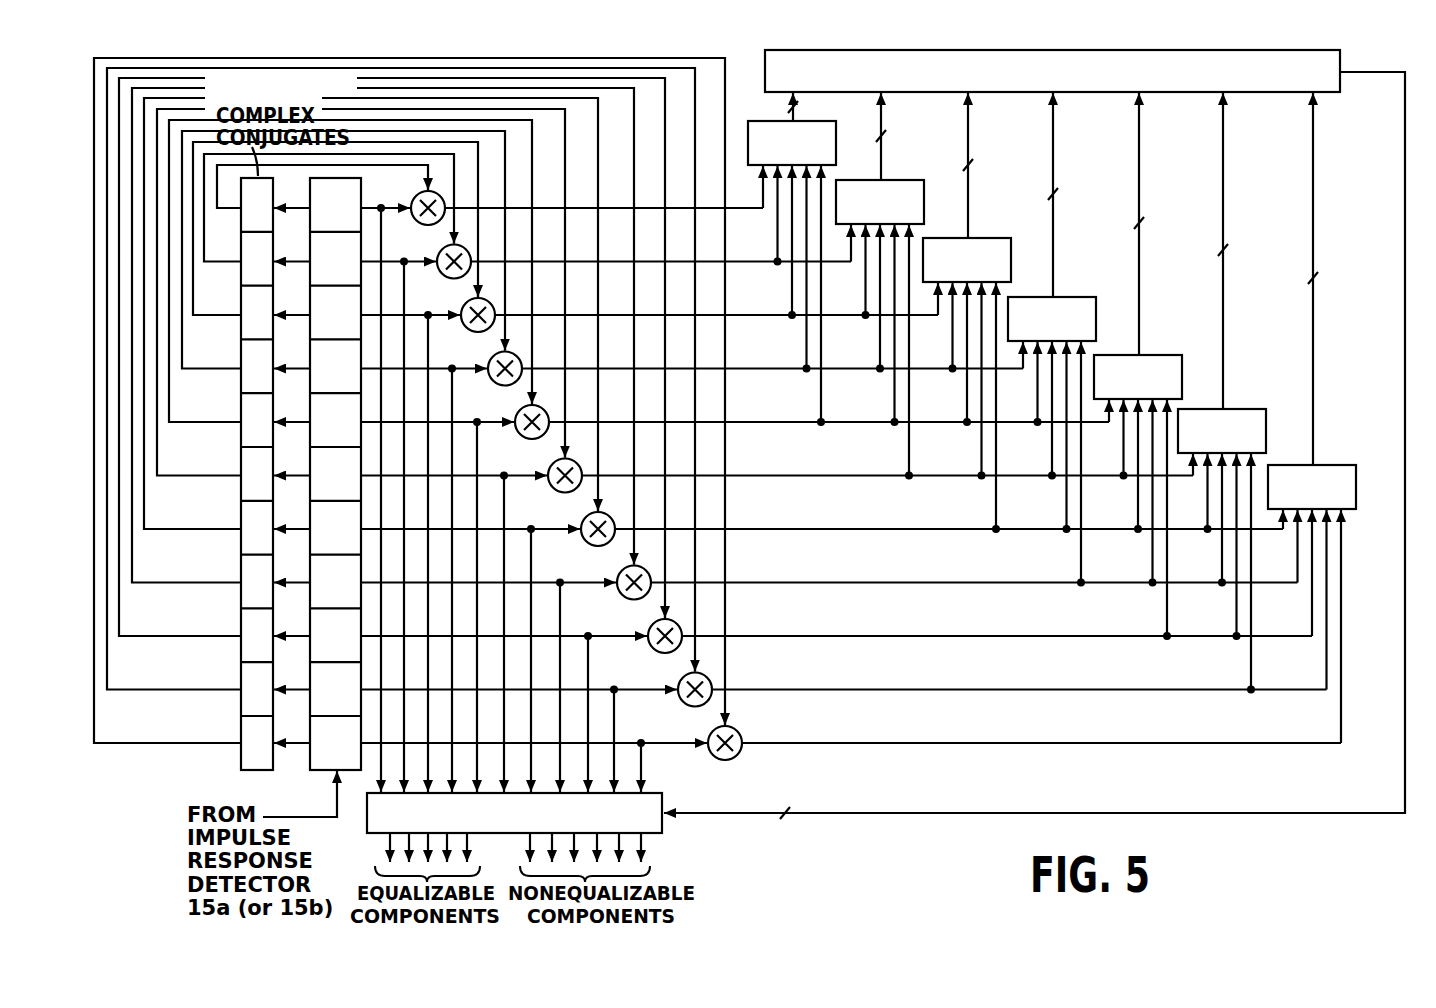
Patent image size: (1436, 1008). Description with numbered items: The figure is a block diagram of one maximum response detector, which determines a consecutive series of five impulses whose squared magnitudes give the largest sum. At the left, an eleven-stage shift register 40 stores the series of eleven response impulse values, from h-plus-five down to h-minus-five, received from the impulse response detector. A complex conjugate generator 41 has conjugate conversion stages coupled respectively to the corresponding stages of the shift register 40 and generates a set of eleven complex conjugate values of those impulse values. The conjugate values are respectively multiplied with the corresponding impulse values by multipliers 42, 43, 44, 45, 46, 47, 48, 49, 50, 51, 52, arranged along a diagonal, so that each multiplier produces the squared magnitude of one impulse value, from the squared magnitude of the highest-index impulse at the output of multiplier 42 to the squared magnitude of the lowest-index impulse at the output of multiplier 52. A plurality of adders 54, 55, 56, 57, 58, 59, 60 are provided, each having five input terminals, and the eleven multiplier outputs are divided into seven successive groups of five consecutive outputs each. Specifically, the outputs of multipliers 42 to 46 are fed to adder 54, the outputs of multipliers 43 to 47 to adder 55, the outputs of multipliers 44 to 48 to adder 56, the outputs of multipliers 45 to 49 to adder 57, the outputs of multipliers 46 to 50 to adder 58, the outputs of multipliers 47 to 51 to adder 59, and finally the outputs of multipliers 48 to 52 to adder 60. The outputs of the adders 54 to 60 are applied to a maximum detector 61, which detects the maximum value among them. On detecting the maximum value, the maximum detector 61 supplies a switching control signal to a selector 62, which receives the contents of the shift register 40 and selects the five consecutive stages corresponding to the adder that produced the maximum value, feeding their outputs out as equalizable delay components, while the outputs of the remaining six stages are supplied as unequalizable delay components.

The shift register 40 is at (310, 760).
The complex conjugate generator 41 is at (241, 752).
The multiplier 42 is at (416, 220).
The multiplier 43 is at (442, 274).
The multiplier 44 is at (466, 327).
The multiplier 45 is at (493, 380).
The multiplier 46 is at (520, 434).
The multiplier 47 is at (553, 488).
The multiplier 48 is at (586, 541).
The multiplier 49 is at (622, 594).
The multiplier 50 is at (653, 648).
The multiplier 51 is at (683, 702).
The multiplier 52 is at (713, 755).
The adder 54 is at (753, 121).
The adder 55 is at (902, 180).
The adder 56 is at (989, 238).
The adder 57 is at (1074, 297).
The adder 58 is at (1160, 355).
The adder 59 is at (1244, 409).
The adder 60 is at (1334, 465).
The maximum detector 61 is at (1340, 92).
The selector 62 is at (367, 812).